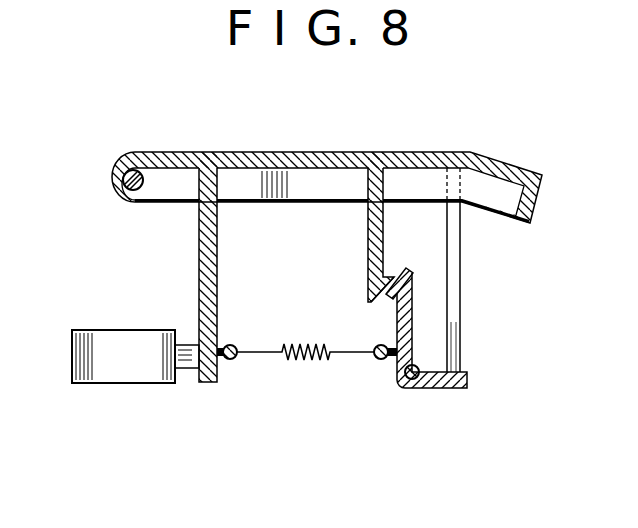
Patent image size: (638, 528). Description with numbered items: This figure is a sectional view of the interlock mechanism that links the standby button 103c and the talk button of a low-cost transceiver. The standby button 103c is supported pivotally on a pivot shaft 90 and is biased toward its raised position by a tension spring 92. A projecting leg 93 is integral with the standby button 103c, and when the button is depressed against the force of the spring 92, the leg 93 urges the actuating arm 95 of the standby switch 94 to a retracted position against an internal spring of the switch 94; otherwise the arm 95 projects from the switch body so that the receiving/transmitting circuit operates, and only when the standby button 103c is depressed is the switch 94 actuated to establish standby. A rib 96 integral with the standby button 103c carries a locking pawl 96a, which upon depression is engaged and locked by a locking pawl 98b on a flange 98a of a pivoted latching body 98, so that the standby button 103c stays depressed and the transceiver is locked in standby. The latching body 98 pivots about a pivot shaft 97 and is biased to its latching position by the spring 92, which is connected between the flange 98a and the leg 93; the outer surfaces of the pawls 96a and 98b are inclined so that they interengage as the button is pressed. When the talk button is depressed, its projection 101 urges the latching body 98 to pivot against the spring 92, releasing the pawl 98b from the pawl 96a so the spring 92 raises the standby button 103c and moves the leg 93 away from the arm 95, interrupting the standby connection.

The pivot shaft 90 is at (112, 181).
The tension spring 92 is at (295, 361).
The projecting leg 93 is at (199, 238).
The standby switch 94 is at (131, 366).
The actuating arm 95 is at (192, 368).
The rib 96 is at (368, 238).
The locking pawl 96a is at (387, 303).
The pivot shaft 97 is at (412, 380).
The latching body 98 is at (449, 388).
The flange 98a is at (412, 318).
The locking pawl 98b is at (420, 282).
The projection 101 is at (461, 240).
The standby button 103c is at (242, 152).